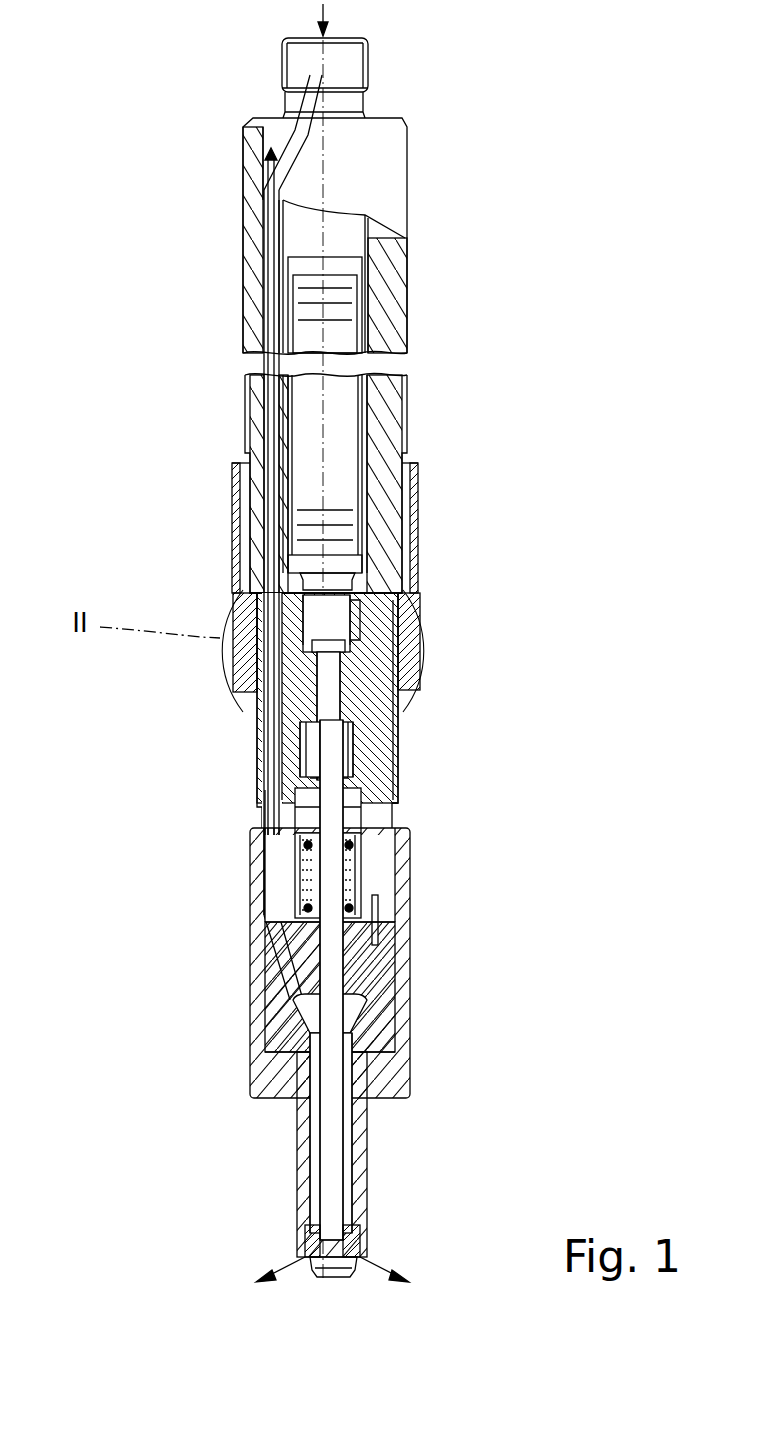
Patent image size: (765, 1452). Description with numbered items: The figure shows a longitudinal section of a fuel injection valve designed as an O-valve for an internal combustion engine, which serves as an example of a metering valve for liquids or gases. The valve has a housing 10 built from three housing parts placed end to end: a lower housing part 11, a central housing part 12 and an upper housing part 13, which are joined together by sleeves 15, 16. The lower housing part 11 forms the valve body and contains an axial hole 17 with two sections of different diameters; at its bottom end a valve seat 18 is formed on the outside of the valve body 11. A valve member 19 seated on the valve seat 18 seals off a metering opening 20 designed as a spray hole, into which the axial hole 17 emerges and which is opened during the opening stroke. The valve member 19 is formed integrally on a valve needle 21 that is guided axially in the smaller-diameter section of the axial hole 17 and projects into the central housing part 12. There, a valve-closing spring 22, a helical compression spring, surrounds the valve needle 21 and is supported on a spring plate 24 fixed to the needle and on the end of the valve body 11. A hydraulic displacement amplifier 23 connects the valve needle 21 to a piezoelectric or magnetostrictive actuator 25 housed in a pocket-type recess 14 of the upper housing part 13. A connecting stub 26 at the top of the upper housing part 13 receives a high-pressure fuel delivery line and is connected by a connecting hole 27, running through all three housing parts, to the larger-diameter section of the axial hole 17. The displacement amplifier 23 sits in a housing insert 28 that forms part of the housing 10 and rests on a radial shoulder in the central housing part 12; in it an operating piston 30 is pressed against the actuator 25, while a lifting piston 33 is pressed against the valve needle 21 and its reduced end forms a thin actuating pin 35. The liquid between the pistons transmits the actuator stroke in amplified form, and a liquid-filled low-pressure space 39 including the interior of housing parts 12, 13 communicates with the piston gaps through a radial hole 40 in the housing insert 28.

The housing 10 is at (420, 275).
The lower housing part 11 is at (379, 1025).
The central housing part 12 is at (399, 773).
The upper housing part 13 is at (387, 403).
The pocket-type recess 14 is at (342, 240).
The sleeve 15 is at (402, 974).
The sleeve 16 is at (421, 565).
The axial hole 17 is at (345, 1146).
The valve seat 18 is at (367, 1238).
The valve member 19 is at (346, 1270).
The metering opening 20 is at (362, 1258).
The valve needle 21 is at (332, 1152).
The valve-closing spring 22 is at (360, 895).
The hydraulic displacement amplifier 23 is at (370, 630).
The spring plate 24 is at (394, 810).
The actuator 25 is at (342, 448).
The connecting stub 26 is at (356, 71).
The connecting hole 27 is at (266, 300).
The housing insert 28 is at (356, 695).
The operating piston 30 is at (332, 614).
The lifting piston 33 is at (328, 666).
The actuating pin 35 is at (270, 776).
The low-pressure space 39 is at (270, 575).
The radial hole 40 is at (302, 740).